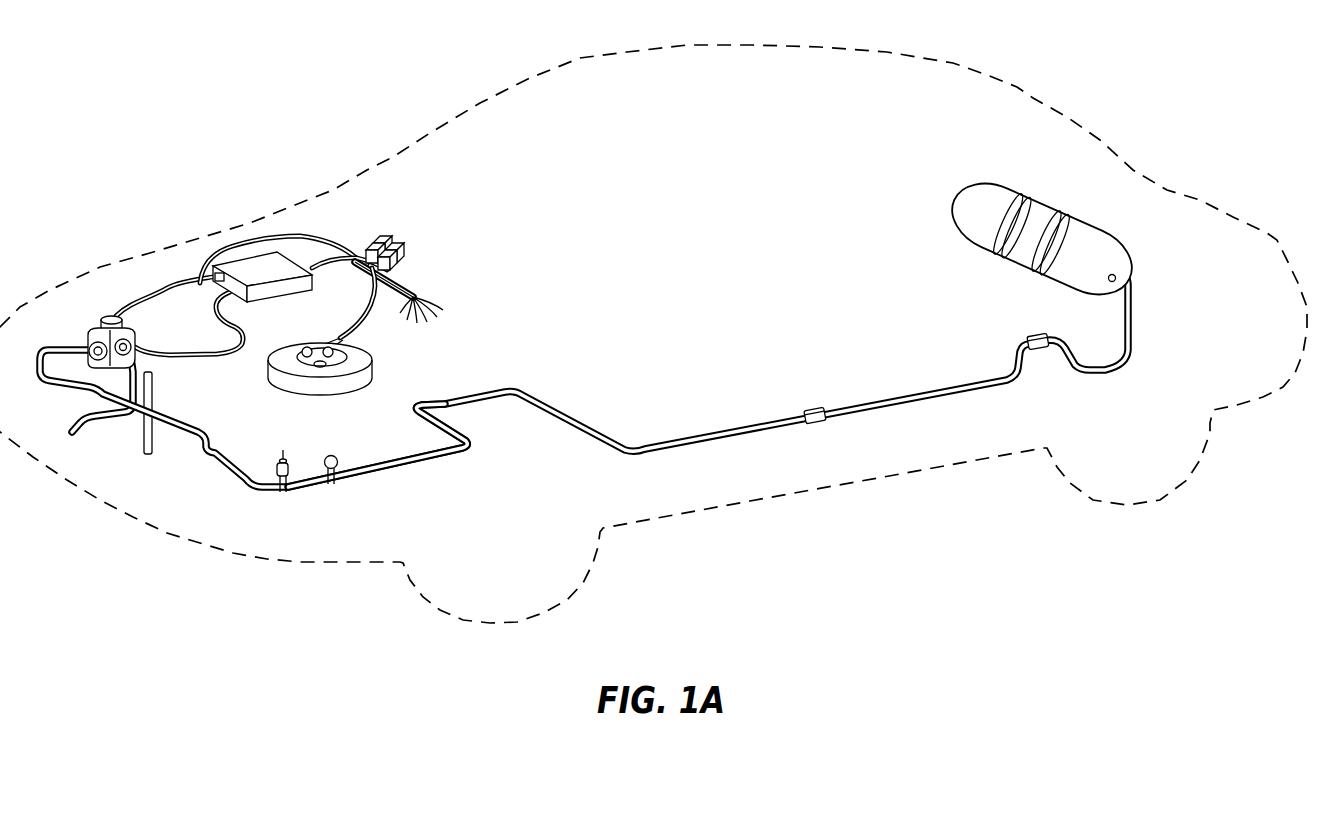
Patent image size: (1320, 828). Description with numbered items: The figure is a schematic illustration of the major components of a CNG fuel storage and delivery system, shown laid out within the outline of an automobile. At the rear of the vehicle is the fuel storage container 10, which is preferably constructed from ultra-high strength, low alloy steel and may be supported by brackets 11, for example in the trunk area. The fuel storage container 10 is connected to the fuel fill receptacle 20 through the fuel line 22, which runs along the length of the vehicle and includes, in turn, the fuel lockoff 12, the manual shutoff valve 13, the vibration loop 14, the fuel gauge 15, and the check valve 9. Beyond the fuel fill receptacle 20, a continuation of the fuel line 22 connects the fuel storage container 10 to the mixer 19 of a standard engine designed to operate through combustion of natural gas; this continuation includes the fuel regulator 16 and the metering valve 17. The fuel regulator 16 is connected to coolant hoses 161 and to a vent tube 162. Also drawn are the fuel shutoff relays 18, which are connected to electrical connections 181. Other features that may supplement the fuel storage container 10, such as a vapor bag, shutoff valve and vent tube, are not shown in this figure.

The check valve 9 is at (276, 466).
The fuel storage container 10 is at (996, 177).
The brackets 11 is at (1068, 220).
The fuel lockoff 12 is at (1034, 334).
The manual shutoff valve 13 is at (817, 400).
The vibration loop 14 is at (440, 447).
The fuel gauge 15 is at (333, 455).
The fuel regulator 16 is at (115, 318).
The coolant hoses 161 is at (74, 431).
The vent tube 162 is at (145, 455).
The metering valve 17 is at (290, 297).
The fuel shutoff relays 18 is at (391, 239).
The electrical connections 181 is at (421, 292).
The mixer 19 is at (374, 355).
The fuel fill receptacle 20 is at (283, 450).
The fuel line 22 is at (226, 477).